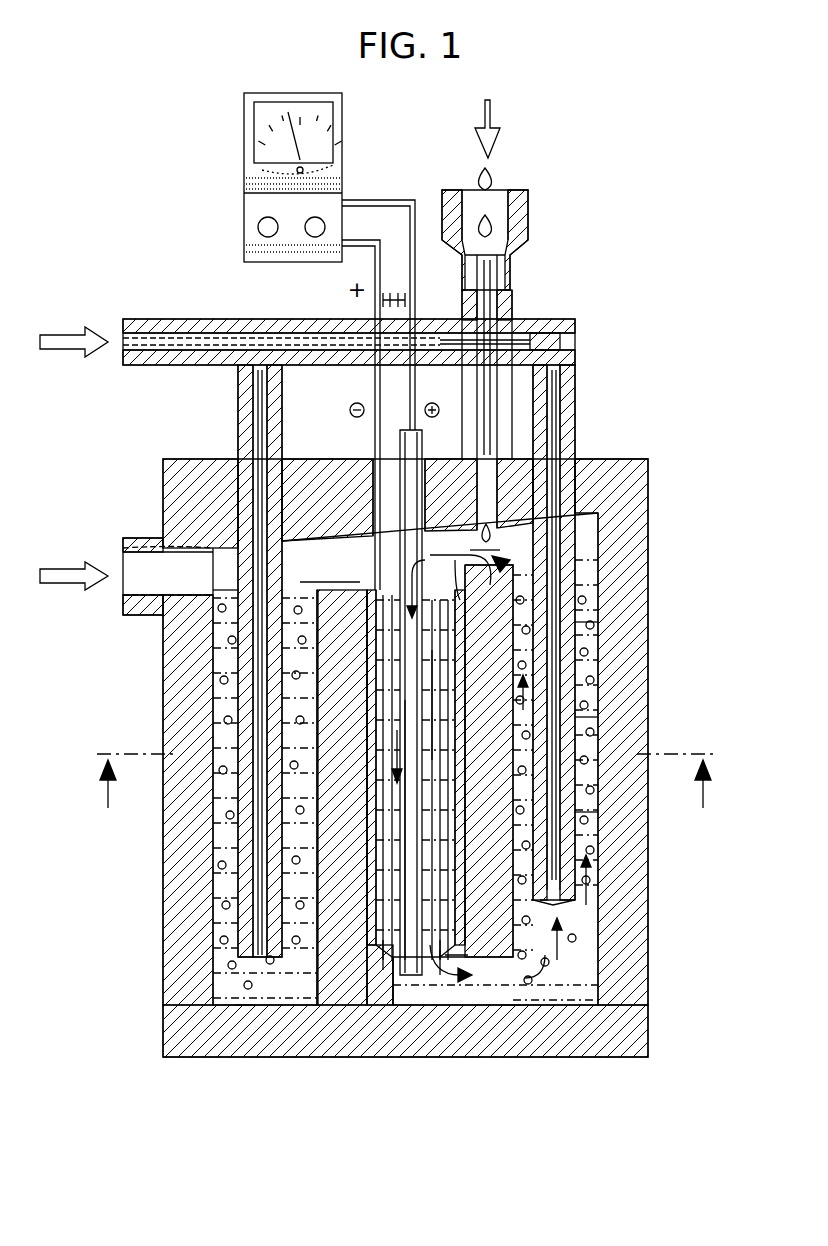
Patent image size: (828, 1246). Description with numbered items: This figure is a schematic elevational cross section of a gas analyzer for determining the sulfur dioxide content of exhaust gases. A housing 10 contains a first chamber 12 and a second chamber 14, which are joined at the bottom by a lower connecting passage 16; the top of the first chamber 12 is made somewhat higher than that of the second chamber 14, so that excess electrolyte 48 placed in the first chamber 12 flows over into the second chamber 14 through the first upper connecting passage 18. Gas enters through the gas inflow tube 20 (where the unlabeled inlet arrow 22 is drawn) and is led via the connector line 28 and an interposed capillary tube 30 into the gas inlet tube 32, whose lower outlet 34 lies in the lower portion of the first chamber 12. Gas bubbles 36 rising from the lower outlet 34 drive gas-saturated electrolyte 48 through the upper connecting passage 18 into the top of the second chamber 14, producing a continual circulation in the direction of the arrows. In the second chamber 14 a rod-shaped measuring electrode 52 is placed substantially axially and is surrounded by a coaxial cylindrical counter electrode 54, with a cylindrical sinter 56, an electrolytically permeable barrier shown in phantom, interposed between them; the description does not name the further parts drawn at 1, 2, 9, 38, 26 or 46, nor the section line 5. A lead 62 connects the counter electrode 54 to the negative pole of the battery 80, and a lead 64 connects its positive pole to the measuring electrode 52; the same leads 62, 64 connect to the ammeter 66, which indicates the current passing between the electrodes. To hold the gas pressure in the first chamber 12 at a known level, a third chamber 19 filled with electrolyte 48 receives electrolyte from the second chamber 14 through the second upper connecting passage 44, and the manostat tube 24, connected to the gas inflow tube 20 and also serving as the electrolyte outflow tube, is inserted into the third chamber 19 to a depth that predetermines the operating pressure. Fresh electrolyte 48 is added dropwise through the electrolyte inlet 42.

The first electrode rod 1 is at (395, 674).
The second electrode rod 2 is at (410, 822).
The section line 5- 5 is at (593, 690).
The inner tube 9 is at (442, 712).
The housing 10 is at (650, 522).
The first chamber 12 is at (598, 812).
The second chamber 14 is at (394, 957).
The lower connecting passage 16 is at (508, 1005).
The upper connecting passage 18 is at (486, 560).
The third chamber 19 is at (245, 998).
The gas inflow tube 20 is at (172, 318).
The gas inlet 22 is at (124, 340).
The manostat tube 24 is at (238, 405).
The tube outlet 26 is at (268, 960).
The connector line 28 is at (262, 332).
The capillary tube 30 is at (512, 338).
The gas inlet tube 32 is at (575, 408).
The lower outlet 34 is at (553, 905).
The gas bubbles 36 is at (590, 625).
The left passage 38 is at (228, 602).
The electrolyte inlet 42 is at (510, 205).
The second upper connecting passage 44 is at (320, 582).
The gas outlet 46 is at (125, 548).
The electrolyte 48 is at (596, 717).
The measuring electrode 52 is at (400, 435).
The counter electrode 54 is at (367, 940).
The cylindrical sinter 56 is at (440, 957).
The lead 62 is at (376, 268).
The lead 64 is at (415, 262).
The ammeter 66 is at (250, 182).
The battery 80 is at (405, 300).